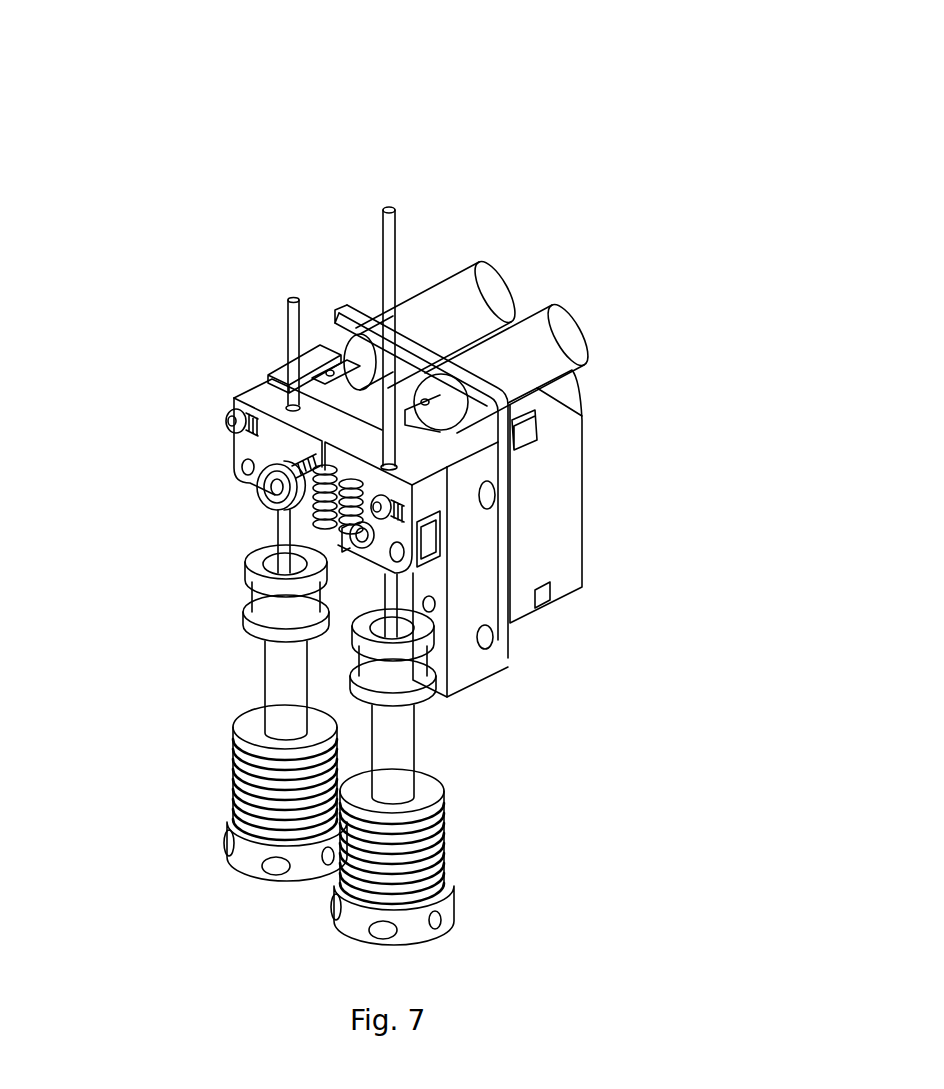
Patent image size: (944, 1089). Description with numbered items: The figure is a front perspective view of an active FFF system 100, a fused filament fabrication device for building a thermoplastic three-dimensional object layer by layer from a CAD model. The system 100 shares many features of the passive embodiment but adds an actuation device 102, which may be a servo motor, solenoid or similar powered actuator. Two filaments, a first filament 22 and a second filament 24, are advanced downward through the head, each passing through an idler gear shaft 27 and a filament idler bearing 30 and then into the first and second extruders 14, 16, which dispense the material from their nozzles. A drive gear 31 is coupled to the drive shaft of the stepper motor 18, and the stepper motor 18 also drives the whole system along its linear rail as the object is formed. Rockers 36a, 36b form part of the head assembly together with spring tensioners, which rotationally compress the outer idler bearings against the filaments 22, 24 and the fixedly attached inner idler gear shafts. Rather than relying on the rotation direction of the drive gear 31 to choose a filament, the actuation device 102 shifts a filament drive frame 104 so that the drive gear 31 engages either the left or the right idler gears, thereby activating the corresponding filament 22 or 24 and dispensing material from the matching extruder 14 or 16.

The active FFF system 100 is at (612, 168).
The actuation device 102 is at (500, 275).
The filament drive frame 104 is at (683, 578).
The first extruder 14 is at (223, 823).
The second extruder 16 is at (427, 920).
The stepper motor 18 is at (563, 527).
The first filament 22 is at (288, 325).
The second filament 24 is at (392, 272).
The idler gear shaft 27 is at (280, 453).
The filament idler bearing 30 is at (430, 550).
The drive gear 31 is at (373, 553).
The rocker 36a is at (260, 398).
The rocker 36b is at (415, 492).